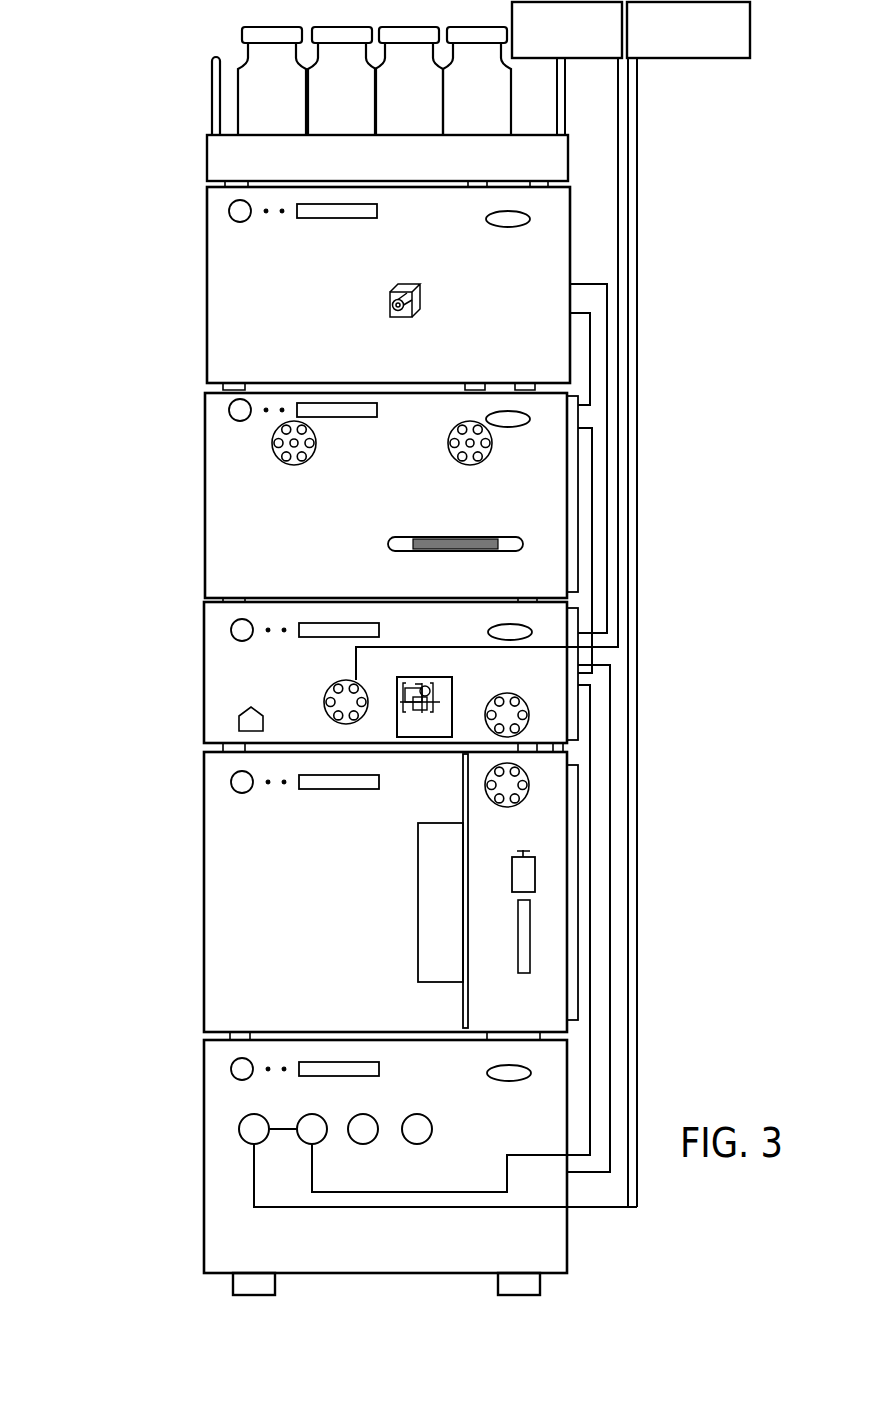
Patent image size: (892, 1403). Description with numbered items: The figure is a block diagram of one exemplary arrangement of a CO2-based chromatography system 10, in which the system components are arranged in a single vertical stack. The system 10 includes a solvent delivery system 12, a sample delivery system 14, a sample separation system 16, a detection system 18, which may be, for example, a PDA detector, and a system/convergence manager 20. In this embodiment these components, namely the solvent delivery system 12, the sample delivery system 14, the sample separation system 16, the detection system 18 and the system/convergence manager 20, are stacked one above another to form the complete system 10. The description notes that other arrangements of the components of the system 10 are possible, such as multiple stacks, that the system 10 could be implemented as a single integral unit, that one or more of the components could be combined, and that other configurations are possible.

The CO2-based chromatography system 10 is at (112, 95).
The solvent delivery system 12 is at (204, 1064).
The sample delivery system 14 is at (204, 780).
The sample separation system 16 is at (205, 480).
The detection system 18 is at (207, 275).
The system/convergence manager 20 is at (204, 665).